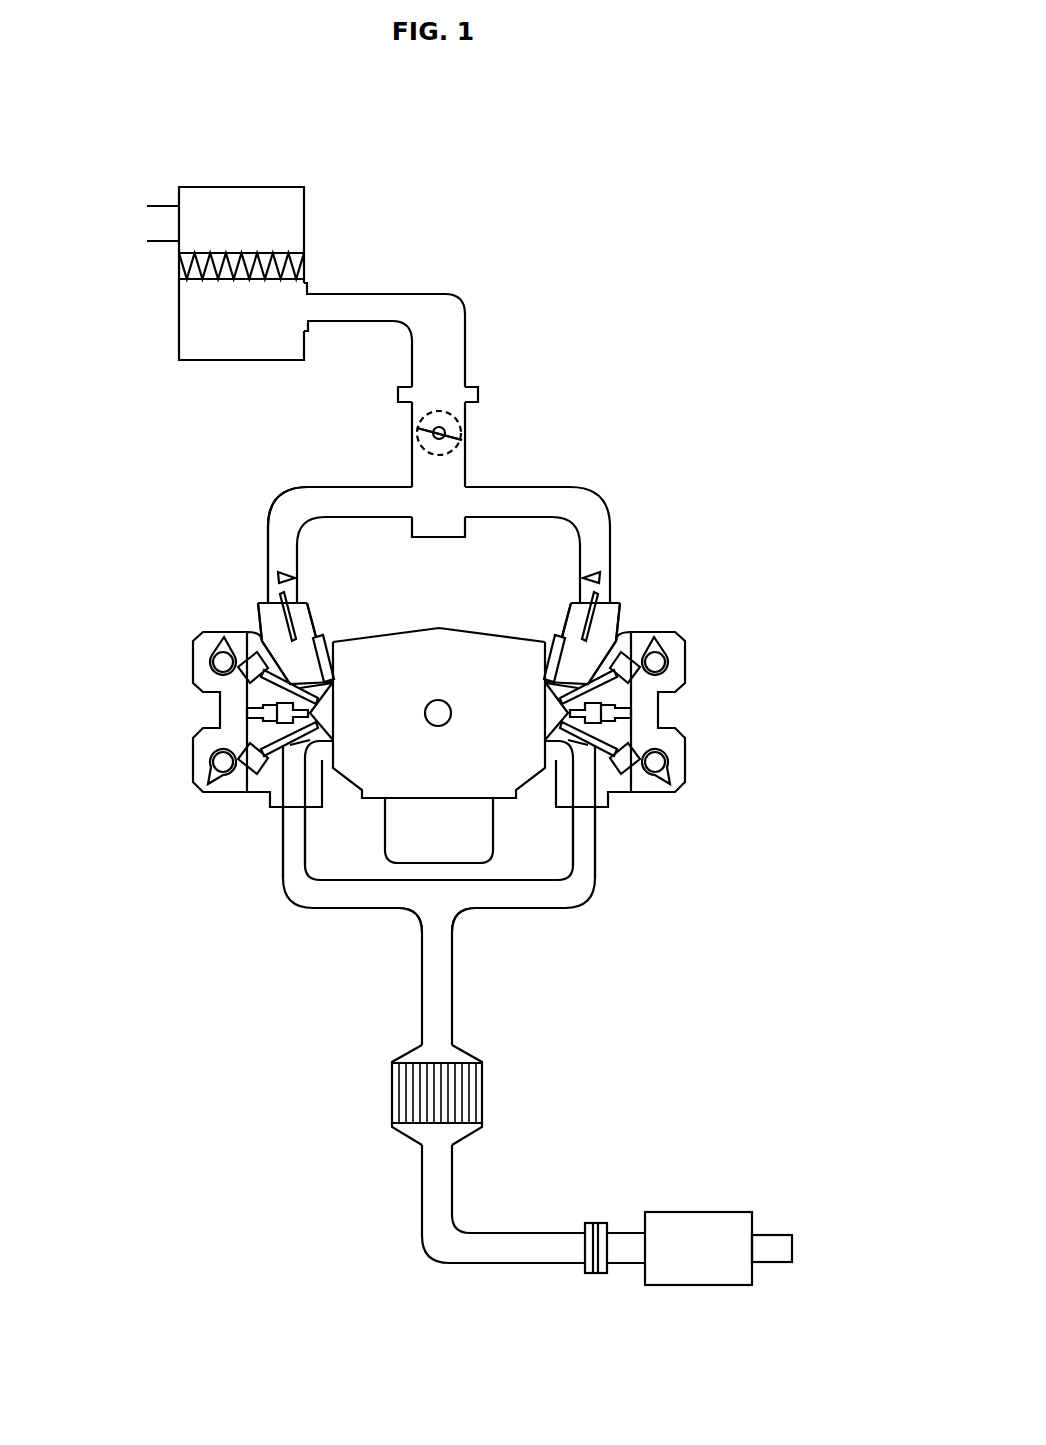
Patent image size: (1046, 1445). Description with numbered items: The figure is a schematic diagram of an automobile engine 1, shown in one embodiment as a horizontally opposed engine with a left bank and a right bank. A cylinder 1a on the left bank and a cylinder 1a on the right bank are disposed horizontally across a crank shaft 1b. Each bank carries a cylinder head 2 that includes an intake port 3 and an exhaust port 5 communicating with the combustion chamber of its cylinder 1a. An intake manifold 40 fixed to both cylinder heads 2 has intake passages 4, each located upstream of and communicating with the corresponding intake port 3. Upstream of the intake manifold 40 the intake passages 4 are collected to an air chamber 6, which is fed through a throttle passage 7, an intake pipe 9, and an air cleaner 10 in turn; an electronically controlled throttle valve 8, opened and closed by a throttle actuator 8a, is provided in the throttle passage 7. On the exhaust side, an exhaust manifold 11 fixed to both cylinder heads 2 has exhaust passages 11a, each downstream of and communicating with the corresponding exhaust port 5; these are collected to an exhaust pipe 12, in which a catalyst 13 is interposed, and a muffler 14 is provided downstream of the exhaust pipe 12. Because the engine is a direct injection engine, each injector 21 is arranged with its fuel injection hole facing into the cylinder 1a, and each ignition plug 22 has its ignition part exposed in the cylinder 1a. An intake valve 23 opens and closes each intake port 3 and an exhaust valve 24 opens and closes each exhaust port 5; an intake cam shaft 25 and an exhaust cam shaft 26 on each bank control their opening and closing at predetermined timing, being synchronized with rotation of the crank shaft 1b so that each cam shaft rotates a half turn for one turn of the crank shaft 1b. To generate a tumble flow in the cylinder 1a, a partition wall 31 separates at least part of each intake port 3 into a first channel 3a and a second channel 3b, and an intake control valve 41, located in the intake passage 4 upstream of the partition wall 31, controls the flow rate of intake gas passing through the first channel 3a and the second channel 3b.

The engine 1 is at (576, 357).
The cylinder 1a is at (322, 708).
The crank shaft 1b is at (452, 711).
The cylinder head 2 is at (200, 636).
The intake port 3 is at (320, 635).
The first channel 3a is at (300, 625).
The second channel 3b is at (262, 615).
The intake passage 4 is at (338, 496).
The exhaust port 5 is at (283, 855).
The air chamber 6 is at (437, 503).
The throttle passage 7 is at (466, 412).
The throttle valve 8 is at (423, 423).
The throttle actuator 8a is at (465, 423).
The intake pipe 9 is at (400, 294).
The air cleaner 10 is at (238, 187).
The exhaust manifold 11 is at (335, 908).
The exhaust passage 11a is at (390, 903).
The exhaust pipe 12 is at (420, 1203).
The catalyst 13 is at (483, 1092).
The muffler 14 is at (698, 1285).
The injector 21 is at (325, 637).
The ignition plug 22 is at (246, 713).
The intake valve 23 is at (262, 620).
The exhaust valve 24 is at (292, 790).
The intake cam shaft 25 is at (212, 663).
The exhaust cam shaft 26 is at (212, 765).
The partition wall 31 is at (280, 582).
The intake manifold 40 is at (292, 490).
The intake control valve 41 is at (288, 576).